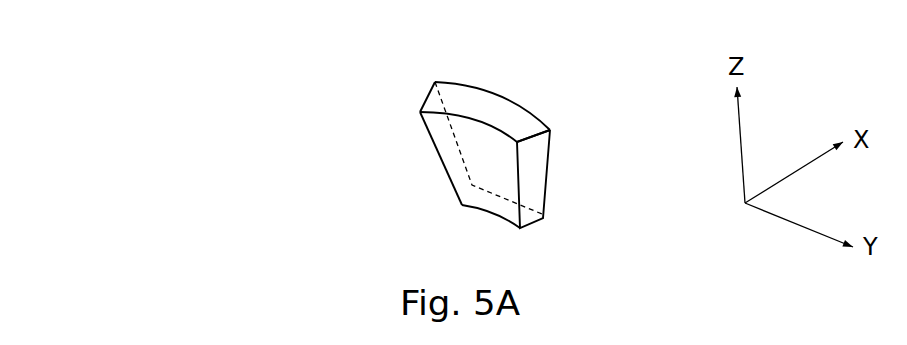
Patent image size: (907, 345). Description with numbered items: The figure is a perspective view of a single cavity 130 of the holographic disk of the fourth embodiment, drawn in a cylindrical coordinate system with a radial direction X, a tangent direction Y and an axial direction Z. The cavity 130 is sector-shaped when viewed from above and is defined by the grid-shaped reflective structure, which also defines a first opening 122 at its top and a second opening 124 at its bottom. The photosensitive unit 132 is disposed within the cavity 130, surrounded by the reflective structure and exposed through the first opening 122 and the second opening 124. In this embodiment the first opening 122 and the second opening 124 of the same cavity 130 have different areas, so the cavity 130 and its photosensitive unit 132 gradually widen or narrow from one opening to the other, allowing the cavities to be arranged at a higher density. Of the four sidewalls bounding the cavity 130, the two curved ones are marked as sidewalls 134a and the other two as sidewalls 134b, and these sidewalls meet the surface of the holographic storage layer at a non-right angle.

The first opening 122 is at (428, 97).
The second opening 124 is at (480, 218).
The cavity 130 is at (491, 156).
The photosensitive unit 132 is at (445, 147).
The curved sidewall 134a is at (487, 90).
The sidewall 134b is at (528, 134).